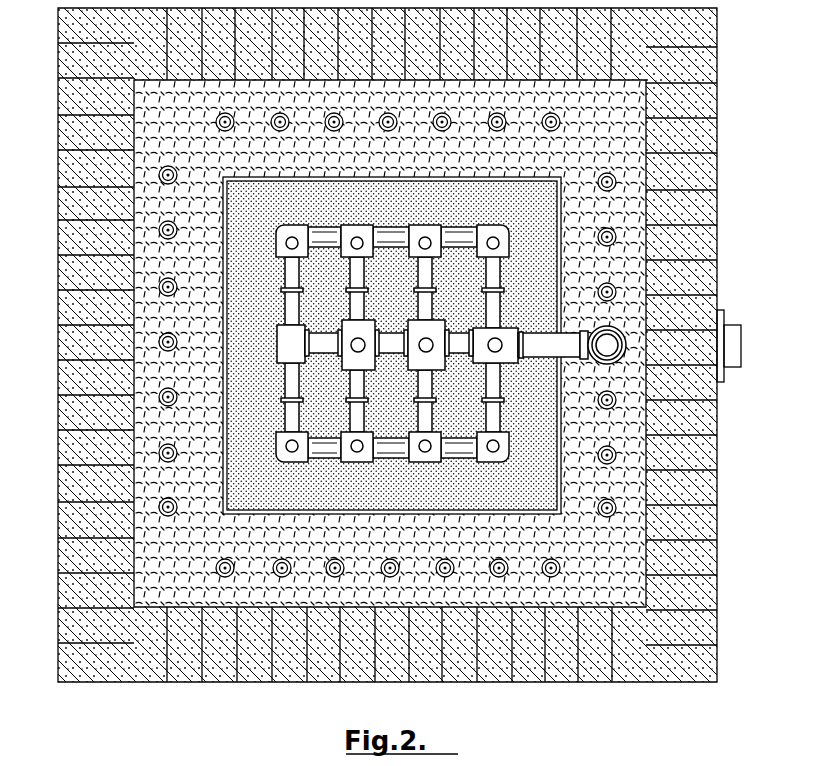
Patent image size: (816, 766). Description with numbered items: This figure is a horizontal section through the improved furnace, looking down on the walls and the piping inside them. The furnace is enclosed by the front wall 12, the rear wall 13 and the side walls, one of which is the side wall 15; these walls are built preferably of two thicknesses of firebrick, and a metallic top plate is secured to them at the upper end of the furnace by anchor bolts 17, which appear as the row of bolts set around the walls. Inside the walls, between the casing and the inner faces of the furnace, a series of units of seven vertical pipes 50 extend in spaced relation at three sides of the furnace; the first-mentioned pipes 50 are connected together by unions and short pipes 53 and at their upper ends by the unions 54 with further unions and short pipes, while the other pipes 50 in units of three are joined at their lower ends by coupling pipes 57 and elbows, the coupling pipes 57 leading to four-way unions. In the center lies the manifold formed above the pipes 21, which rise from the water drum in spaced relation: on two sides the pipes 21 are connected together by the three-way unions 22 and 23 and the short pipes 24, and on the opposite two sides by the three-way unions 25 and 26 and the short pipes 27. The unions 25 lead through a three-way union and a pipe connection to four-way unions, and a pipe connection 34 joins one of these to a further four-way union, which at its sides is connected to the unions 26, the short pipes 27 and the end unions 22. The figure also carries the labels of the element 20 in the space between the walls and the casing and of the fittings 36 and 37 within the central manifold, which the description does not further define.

The front wall 12 is at (735, 438).
The rear wall 13 is at (60, 380).
The side wall 15 is at (530, 680).
The anchor bolts 17 is at (483, 290).
The filling material 20 is at (577, 133).
The pipes 21 is at (349, 228).
The three-way unions 22 is at (286, 228).
The three-way unions 23 is at (364, 228).
The short pipes 24 is at (459, 228).
The three-way unions 25 is at (232, 337).
The three-way unions 26 is at (483, 323).
The short pipes 27 is at (563, 277).
The pipe connection 34 is at (459, 343).
The cross fitting 36 is at (430, 345).
The nipple 37 is at (342, 344).
The vertical pipes 50 is at (614, 182).
The short pipes 53 is at (607, 345).
The unions 54 is at (549, 345).
The coupling pipes 57 is at (574, 345).